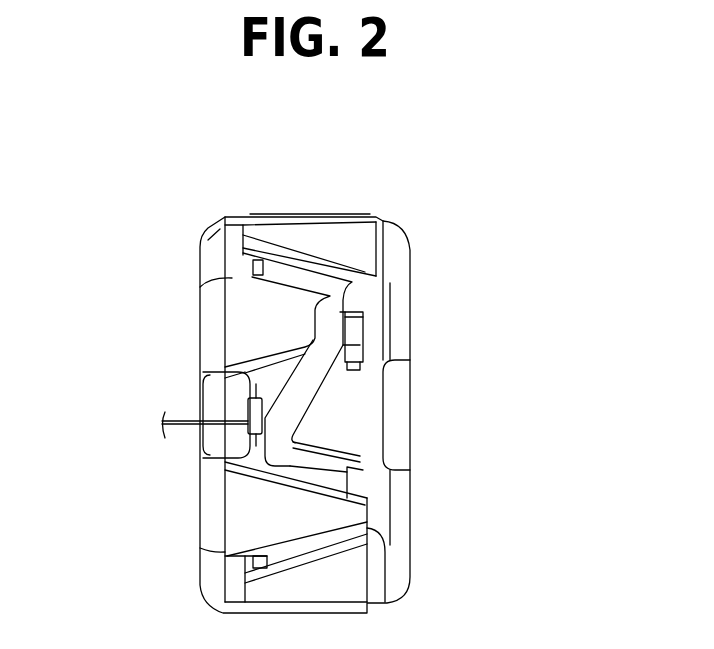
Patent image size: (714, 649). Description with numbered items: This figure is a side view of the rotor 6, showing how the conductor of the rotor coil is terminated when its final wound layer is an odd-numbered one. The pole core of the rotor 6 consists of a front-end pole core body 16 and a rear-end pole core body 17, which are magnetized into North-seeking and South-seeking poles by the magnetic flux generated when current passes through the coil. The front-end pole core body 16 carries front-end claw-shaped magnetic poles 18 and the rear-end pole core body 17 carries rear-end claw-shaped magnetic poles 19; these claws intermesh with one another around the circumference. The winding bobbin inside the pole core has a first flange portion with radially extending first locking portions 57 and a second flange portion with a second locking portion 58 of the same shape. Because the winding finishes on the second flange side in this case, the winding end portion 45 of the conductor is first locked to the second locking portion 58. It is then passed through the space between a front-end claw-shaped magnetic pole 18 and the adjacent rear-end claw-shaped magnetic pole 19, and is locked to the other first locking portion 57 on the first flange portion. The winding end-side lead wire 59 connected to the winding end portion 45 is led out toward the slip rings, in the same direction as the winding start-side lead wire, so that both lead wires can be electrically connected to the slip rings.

The rotor 6 is at (525, 260).
The front-end pole core body 16 is at (410, 410).
The rear-end pole core body 17 is at (202, 513).
The front-end claw-shaped magnetic poles 18 is at (345, 252).
The rear-end claw-shaped magnetic poles 19 is at (260, 313).
The winding end portion 45 is at (330, 383).
The first locking portion 57 is at (240, 402).
The second locking portion 58 is at (355, 330).
The winding end-side lead wire 59 is at (180, 433).